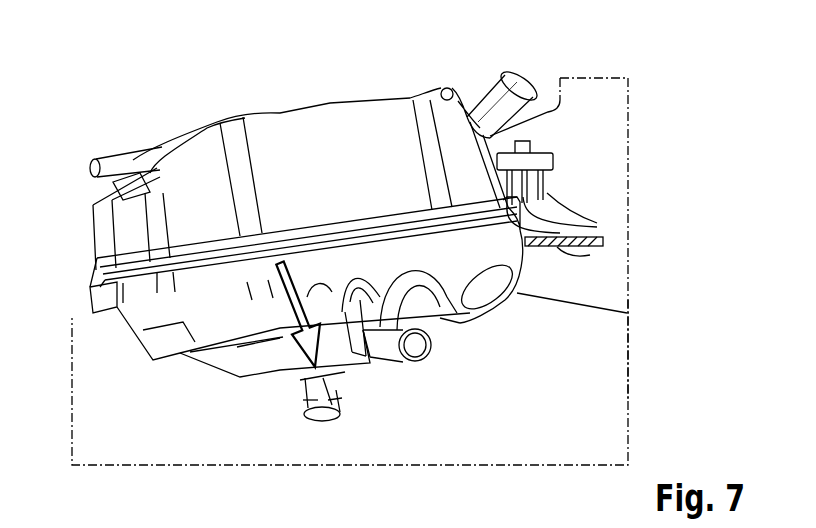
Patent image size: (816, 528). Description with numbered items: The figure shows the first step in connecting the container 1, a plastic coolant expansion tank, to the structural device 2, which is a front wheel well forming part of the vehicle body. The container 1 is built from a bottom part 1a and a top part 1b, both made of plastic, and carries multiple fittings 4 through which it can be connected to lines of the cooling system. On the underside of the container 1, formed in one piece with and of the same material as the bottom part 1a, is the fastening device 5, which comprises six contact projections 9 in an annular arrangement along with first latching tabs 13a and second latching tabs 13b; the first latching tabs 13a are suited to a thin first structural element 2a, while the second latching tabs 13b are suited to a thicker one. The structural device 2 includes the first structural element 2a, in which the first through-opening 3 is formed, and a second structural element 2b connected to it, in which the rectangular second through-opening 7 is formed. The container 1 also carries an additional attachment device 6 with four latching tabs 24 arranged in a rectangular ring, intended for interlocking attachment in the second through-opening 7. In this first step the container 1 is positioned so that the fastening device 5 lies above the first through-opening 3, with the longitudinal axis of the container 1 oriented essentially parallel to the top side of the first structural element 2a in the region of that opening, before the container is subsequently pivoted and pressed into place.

The container 1 is at (350, 97).
The bottom part 1a is at (130, 327).
The top part 1b is at (310, 122).
The structural device 2 is at (671, 335).
The first structural element 2a is at (617, 379).
The second structural element 2b is at (583, 223).
The first through-opening 3 is at (338, 395).
The fittings 4 is at (493, 93).
The fastening device 5 is at (363, 386).
The attachment device 6 is at (562, 160).
The second through-opening 7 is at (557, 247).
The contact projections 9 is at (287, 388).
The first latching tabs 13a is at (307, 397).
The second latching tabs 13b is at (348, 400).
The latching tabs 24 is at (553, 185).